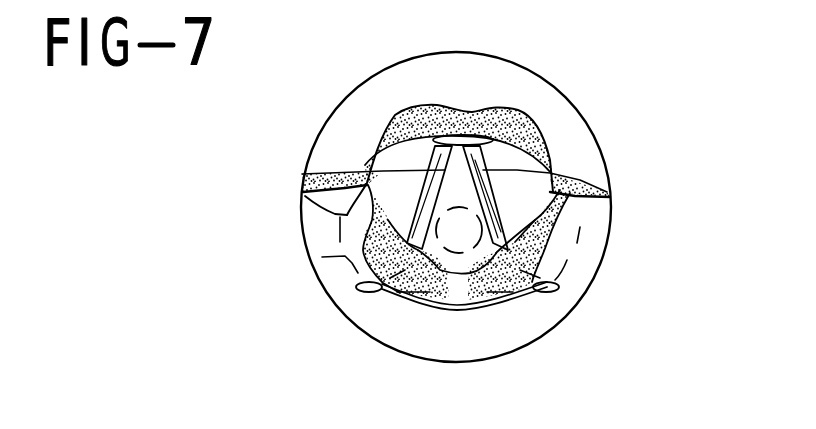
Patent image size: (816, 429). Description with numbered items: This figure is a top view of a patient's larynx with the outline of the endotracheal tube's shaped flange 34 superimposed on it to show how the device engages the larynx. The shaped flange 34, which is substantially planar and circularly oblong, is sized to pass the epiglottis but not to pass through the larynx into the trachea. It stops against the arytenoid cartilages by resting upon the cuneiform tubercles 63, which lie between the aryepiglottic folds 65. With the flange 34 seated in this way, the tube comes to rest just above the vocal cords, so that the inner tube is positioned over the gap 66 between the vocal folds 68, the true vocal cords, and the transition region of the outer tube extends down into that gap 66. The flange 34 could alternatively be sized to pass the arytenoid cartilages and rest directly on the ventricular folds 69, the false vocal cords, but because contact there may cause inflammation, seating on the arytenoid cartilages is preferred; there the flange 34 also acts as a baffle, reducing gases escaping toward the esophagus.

The shaped flange 34 is at (302, 264).
The cuneiform tubercles 63 is at (407, 273).
The aryepiglottic folds 65 is at (347, 215).
The gap 66 is at (457, 162).
The vocal folds 68 is at (478, 270).
The ventricular folds 69 is at (417, 155).